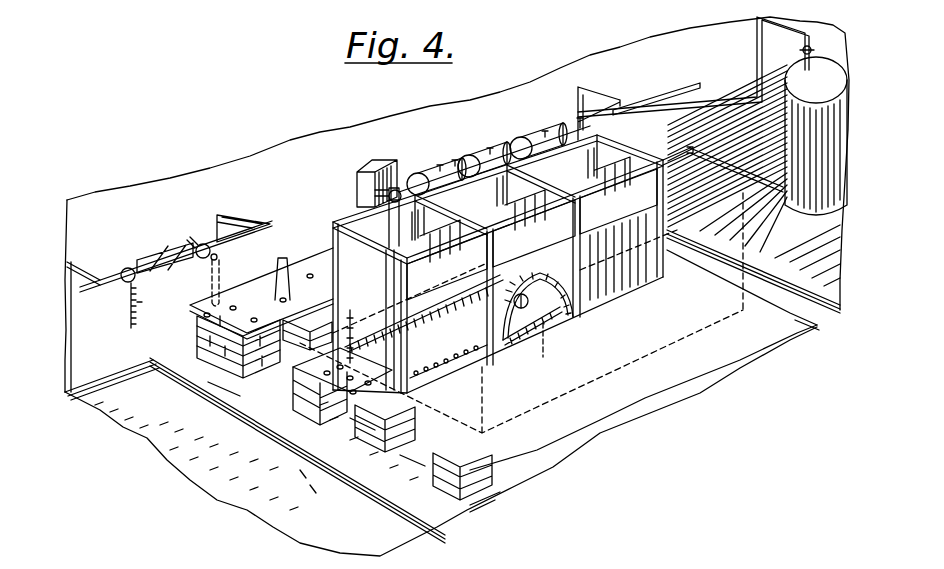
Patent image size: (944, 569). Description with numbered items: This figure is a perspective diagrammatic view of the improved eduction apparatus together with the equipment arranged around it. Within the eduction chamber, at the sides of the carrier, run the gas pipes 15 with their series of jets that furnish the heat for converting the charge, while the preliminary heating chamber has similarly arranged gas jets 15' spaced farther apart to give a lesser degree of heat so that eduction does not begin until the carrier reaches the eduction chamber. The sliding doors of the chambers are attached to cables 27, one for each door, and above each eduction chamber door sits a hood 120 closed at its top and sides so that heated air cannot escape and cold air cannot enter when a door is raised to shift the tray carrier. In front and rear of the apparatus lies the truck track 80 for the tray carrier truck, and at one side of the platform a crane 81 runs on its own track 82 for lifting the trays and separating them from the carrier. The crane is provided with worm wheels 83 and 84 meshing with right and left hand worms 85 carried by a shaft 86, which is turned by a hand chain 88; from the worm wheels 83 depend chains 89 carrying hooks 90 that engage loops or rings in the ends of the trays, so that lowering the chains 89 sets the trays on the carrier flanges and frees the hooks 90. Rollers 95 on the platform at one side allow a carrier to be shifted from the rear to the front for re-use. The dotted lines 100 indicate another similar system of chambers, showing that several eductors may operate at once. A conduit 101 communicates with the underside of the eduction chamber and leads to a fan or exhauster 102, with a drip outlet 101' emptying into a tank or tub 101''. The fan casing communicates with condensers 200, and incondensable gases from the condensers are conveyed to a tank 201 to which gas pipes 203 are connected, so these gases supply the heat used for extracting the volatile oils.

The gas pipes 15 is at (552, 306).
The gas jets 15' is at (448, 355).
The cables 27 is at (462, 216).
The truck track 80 is at (410, 500).
The crane 81 is at (156, 258).
The track 82 is at (256, 223).
The worm wheels 83 is at (219, 256).
The worm wheels 84 is at (125, 283).
The right and left hand worms 85 is at (129, 268).
The shaft 86 is at (189, 239).
The hand chain 88 is at (221, 277).
The depending chain 89 is at (135, 318).
The hooks 90 is at (138, 297).
The rollers 95 is at (254, 318).
The dotted lines 100 is at (484, 388).
The conduit 101 is at (464, 316).
The drip outlet 101' is at (261, 278).
The tank or tub 101'' is at (355, 325).
The fan or exhauster 102 is at (377, 170).
The hood 120 is at (656, 148).
The condensers 200 is at (463, 158).
The tank 201 is at (787, 147).
The gas pipes 203 is at (700, 150).